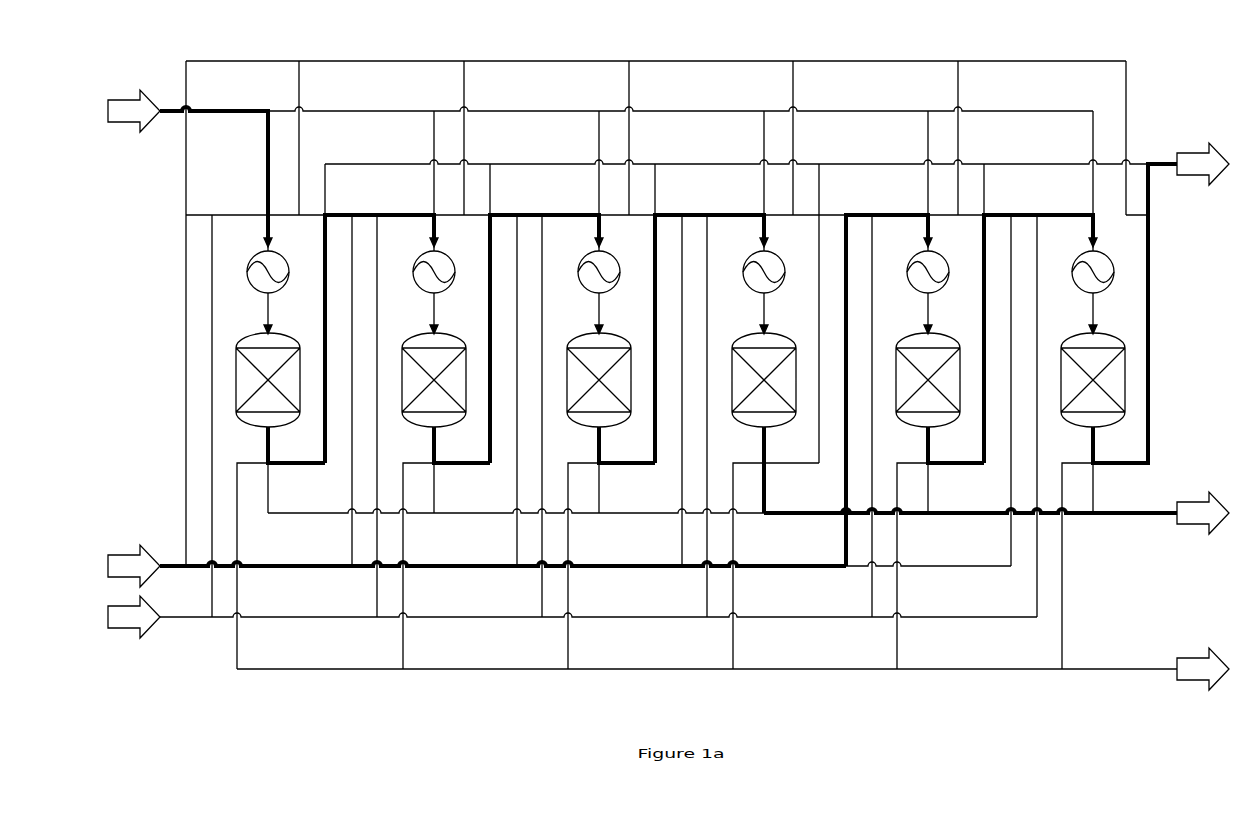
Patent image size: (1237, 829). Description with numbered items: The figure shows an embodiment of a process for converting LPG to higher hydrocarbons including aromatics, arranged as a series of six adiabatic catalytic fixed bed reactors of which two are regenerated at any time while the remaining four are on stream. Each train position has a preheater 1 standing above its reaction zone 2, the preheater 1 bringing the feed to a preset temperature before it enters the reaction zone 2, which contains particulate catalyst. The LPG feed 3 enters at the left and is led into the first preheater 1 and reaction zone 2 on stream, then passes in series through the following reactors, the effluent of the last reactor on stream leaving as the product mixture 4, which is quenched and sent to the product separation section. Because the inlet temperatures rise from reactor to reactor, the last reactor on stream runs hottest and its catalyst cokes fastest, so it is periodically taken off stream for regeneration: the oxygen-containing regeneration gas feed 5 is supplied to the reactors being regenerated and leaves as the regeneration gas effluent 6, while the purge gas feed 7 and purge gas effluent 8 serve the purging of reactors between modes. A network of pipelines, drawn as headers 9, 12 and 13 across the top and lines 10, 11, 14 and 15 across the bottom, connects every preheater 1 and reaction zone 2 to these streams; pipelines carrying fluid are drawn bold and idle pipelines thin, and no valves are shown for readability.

The preheater 1 is at (283, 262).
The reaction zone 2 is at (285, 344).
The LPG feed 3 is at (188, 165).
The product mixture 4 is at (1203, 513).
The oxygen-containing regeneration gas feed 5 is at (134, 566).
The regeneration gas effluent 6 is at (1203, 164).
The purge gas feed 7 is at (134, 617).
The purge gas effluent 8 is at (1203, 669).
The distribution line 9 is at (707, 111).
The product line 10 is at (805, 513).
The feed line 11 is at (805, 566).
The header line 12 is at (708, 164).
The header line 13 is at (708, 61).
The feed line 14 is at (805, 617).
The collection line 15 is at (805, 669).